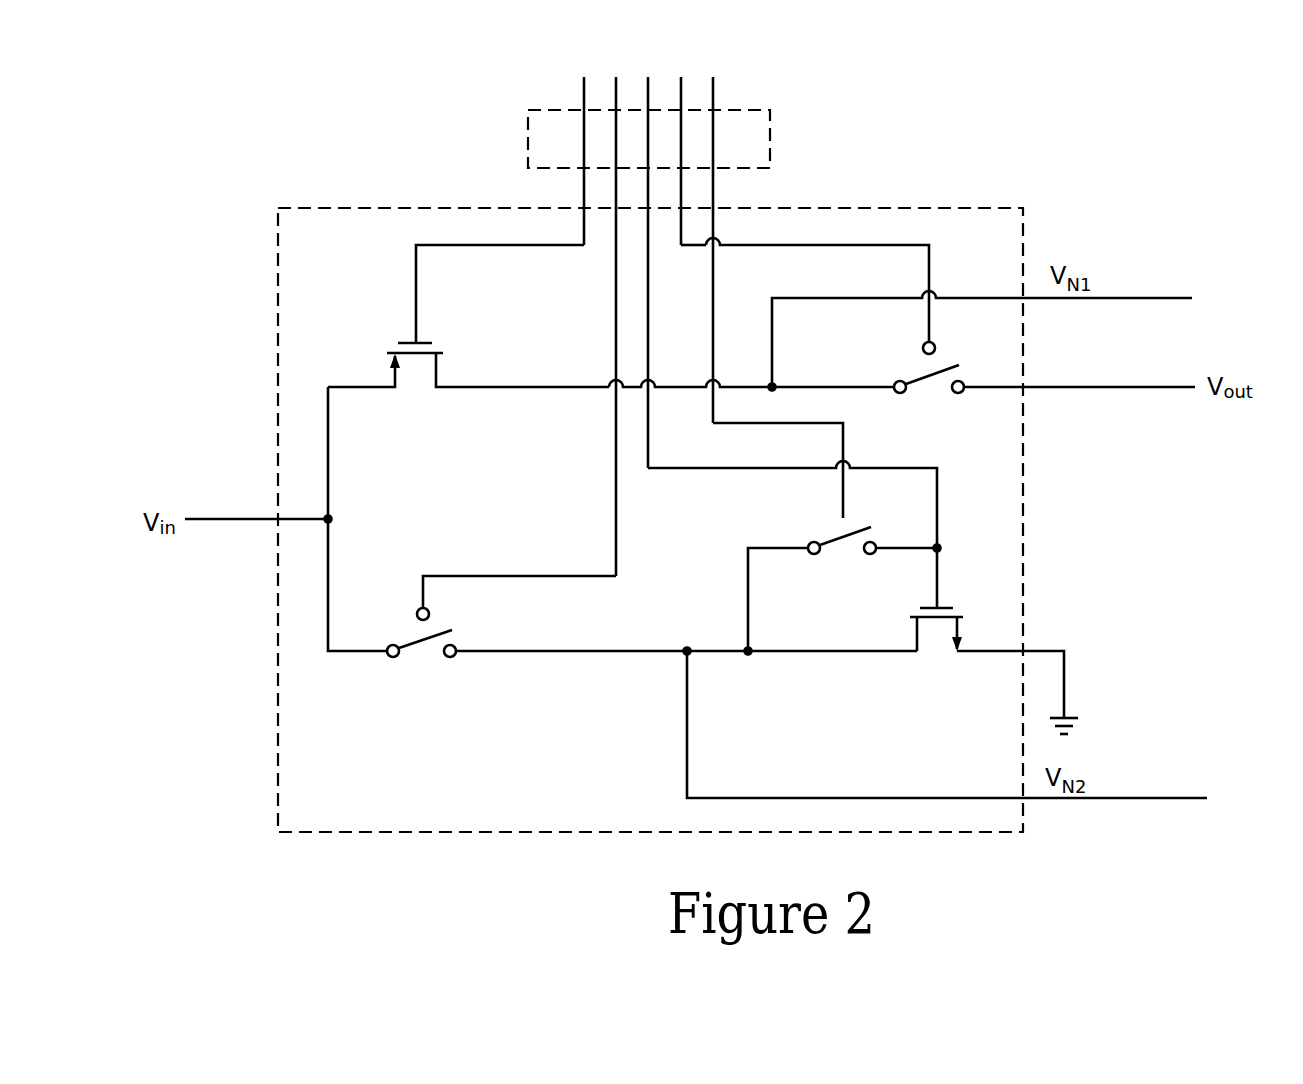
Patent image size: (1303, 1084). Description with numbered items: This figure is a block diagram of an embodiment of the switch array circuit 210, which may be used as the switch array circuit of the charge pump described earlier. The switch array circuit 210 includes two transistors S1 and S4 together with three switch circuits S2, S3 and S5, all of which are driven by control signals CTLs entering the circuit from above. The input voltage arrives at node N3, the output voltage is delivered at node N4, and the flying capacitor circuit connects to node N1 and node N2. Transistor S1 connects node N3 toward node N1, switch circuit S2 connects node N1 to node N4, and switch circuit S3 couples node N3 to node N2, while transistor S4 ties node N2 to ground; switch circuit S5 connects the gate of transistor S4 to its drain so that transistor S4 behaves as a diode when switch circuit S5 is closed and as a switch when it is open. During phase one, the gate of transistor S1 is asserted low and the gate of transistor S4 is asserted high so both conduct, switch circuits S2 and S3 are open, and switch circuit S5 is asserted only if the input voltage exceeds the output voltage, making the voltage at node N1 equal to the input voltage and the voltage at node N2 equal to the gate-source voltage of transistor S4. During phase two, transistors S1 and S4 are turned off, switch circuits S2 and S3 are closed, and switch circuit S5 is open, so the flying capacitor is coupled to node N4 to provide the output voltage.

The switch array circuit 210 is at (346, 273).
The control signals CTLs is at (770, 128).
The transistor S1 is at (468, 316).
The switch circuit S2 is at (822, 331).
The switch circuit S3 is at (622, 537).
The transistor S4 is at (863, 597).
The switch circuit S5 is at (825, 537).
The node N1 is at (1166, 298).
The node N2 is at (1178, 798).
The node N3 is at (240, 519).
The node N4 is at (1112, 387).